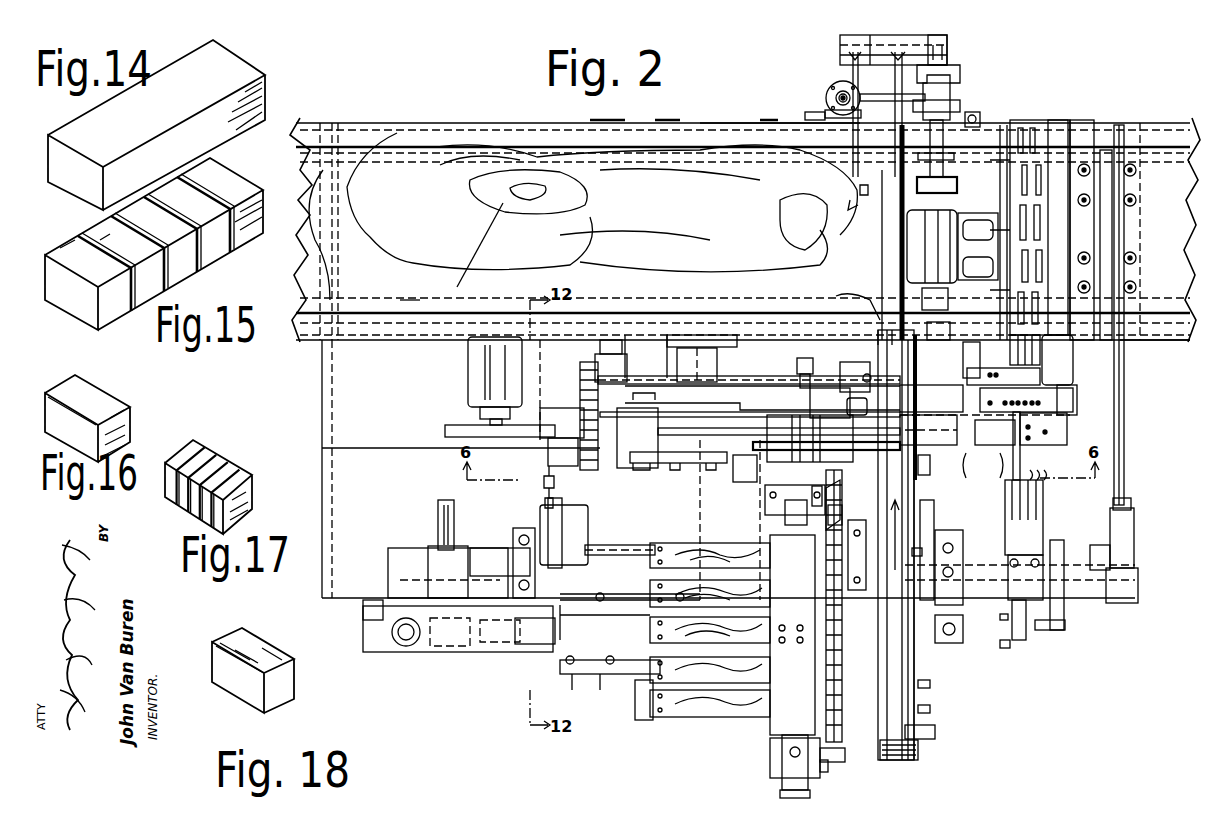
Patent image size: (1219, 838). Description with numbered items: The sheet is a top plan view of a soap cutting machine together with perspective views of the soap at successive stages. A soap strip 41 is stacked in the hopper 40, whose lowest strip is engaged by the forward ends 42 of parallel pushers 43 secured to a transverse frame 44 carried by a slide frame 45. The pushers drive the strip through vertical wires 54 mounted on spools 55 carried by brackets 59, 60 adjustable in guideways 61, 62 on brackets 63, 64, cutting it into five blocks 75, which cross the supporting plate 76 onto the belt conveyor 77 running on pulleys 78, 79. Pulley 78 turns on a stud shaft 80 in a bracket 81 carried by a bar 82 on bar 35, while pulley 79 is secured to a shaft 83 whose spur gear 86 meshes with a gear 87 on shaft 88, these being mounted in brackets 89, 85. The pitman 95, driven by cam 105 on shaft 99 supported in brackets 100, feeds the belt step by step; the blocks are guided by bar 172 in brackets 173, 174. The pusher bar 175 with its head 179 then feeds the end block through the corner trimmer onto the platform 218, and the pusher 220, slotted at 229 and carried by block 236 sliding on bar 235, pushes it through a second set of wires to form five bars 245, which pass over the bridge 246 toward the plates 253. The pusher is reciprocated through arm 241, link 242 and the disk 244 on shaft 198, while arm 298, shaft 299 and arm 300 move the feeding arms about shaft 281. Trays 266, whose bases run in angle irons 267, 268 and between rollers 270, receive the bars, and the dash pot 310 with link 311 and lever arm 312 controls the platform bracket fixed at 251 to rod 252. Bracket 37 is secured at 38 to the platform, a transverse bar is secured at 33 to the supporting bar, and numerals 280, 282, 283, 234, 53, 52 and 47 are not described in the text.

In FIG. 14, the soap strip 41 is at (244, 66).
In FIG. 15, the block 75 is at (232, 181).
In FIG. 16, the block 75 is at (108, 395).
In FIG. 17, the bar 245 is at (242, 472).
In FIG. 2, the bar 245 is at (1042, 350).
In FIG. 2, the arm 298 is at (947, 35).
In FIG. 2, the shaft 299 is at (950, 58).
In FIG. 2, the dash pot 310 is at (828, 92).
In FIG. 2, the link 311 is at (840, 96).
In FIG. 2, the arm 300 is at (860, 96).
In FIG. 2, the lever arm 312 is at (812, 115).
In FIG. 2, the tray 266 is at (712, 123).
In FIG. 2, the roller 270 is at (968, 110).
In FIG. 2, the plate 253 is at (1010, 125).
In FIG. 2, the disk 244 is at (1108, 130).
In FIG. 2, the angle iron frame member 268 is at (405, 168).
In FIG. 2, the angle iron frame member 267 is at (415, 300).
In FIG. 2, the shaft 198 is at (860, 190).
In FIG. 2, the fixing point 251 is at (907, 215).
In FIG. 2, the housing plate 280 is at (907, 235).
In FIG. 2, the rod 252 is at (900, 247).
In FIG. 2, the shaft 281 is at (937, 265).
In FIG. 2, the guide arm 282 is at (870, 300).
In FIG. 2, the pulley 79 is at (877, 327).
In FIG. 2, the spur gear 86 is at (610, 352).
In FIG. 2, the bracket 89 is at (630, 375).
In FIG. 2, the shaft 88 is at (555, 408).
In FIG. 2, the gear 87 is at (598, 460).
In FIG. 2, the bracket 85 is at (819, 354).
In FIG. 2, the shaft 83 is at (815, 372).
In FIG. 2, the coupling block 283 is at (922, 392).
In FIG. 2, the bridge 246 is at (1073, 378).
In FIG. 2, the feed plate 234 is at (1078, 396).
In FIG. 2, the platform 218 is at (1067, 434).
In FIG. 2, the link 242 is at (1124, 445).
In FIG. 2, the pusher bar 175 is at (989, 449).
In FIG. 2, the head or plate 179 is at (1012, 470).
In FIG. 2, the slot 229 is at (1044, 466).
In FIG. 2, the bracket 173 is at (930, 468).
In FIG. 2, the bar 172 is at (914, 490).
In FIG. 2, the supporting plate 76 is at (880, 712).
In FIG. 2, the pitman or link 95 is at (544, 492).
In FIG. 2, the post 53 is at (438, 524).
In FIG. 2, the bracket 100 is at (513, 534).
In FIG. 2, the cam 105 is at (570, 516).
In FIG. 2, the shaft 99 is at (622, 546).
In FIG. 2, the slide frame 45 is at (618, 594).
In FIG. 2, the transverse frame 44 is at (658, 544).
In FIG. 2, the pusher 43 is at (704, 546).
In FIG. 2, the forward end 42 is at (760, 546).
In FIG. 2, the securing point 33 is at (800, 645).
In FIG. 2, the wire 54 is at (765, 520).
In FIG. 2, the bracket 63 is at (827, 487).
In FIG. 2, the guideway 61 is at (845, 497).
In FIG. 2, the bracket 59 is at (842, 508).
In FIG. 2, the spool 55 is at (842, 725).
In FIG. 2, the belt conveyor 77 is at (910, 528).
In FIG. 2, the securing point 38 is at (953, 548).
In FIG. 2, the bracket 37 is at (956, 592).
In FIG. 2, the pusher 220 is at (1030, 525).
In FIG. 2, the block 236 is at (1030, 640).
In FIG. 2, the bar 35 is at (1026, 652).
In FIG. 2, the bar 235 is at (1010, 650).
In FIG. 2, the bracket 174 is at (928, 655).
In FIG. 2, the arm 241 is at (1115, 603).
In FIG. 2, the base plate 52 is at (372, 628).
In FIG. 2, the coupling 47 is at (520, 645).
In FIG. 2, the hopper 40 is at (770, 745).
In FIG. 2, the bracket 64 is at (806, 795).
In FIG. 2, the guideway 62 is at (824, 772).
In FIG. 2, the bracket 60 is at (835, 762).
In FIG. 2, the bar 82 is at (925, 686).
In FIG. 2, the bracket 81 is at (926, 712).
In FIG. 2, the stud shaft 80 is at (930, 738).
In FIG. 2, the pulley 78 is at (912, 752).